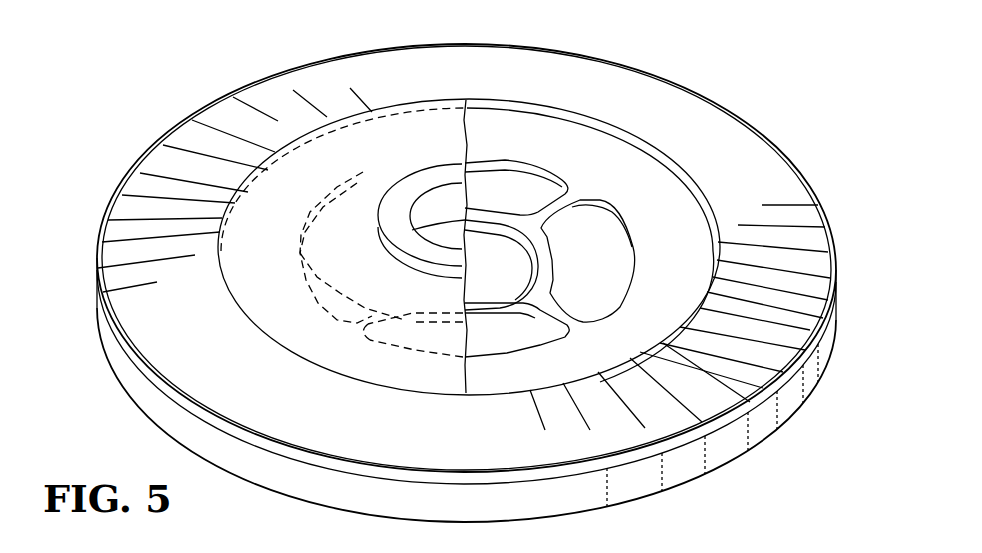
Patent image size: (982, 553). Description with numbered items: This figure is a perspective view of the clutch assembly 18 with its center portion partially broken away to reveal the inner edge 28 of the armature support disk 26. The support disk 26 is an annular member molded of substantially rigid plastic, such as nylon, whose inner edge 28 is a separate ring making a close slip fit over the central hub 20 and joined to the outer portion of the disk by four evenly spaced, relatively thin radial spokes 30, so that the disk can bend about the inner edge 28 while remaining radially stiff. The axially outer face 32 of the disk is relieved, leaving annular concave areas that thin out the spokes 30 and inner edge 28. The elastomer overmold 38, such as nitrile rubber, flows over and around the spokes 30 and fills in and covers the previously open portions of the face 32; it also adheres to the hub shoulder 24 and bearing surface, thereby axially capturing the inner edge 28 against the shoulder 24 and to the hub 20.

The clutch assembly 18 is at (176, 124).
The central hub 20 is at (420, 182).
The terminal annular shoulder 24 is at (443, 178).
The armature support disk 26 is at (669, 100).
The inner edge 28 is at (497, 229).
The radial spokes 30 is at (550, 210).
The axially outer face 32 is at (668, 200).
The overmold 38 is at (332, 118).